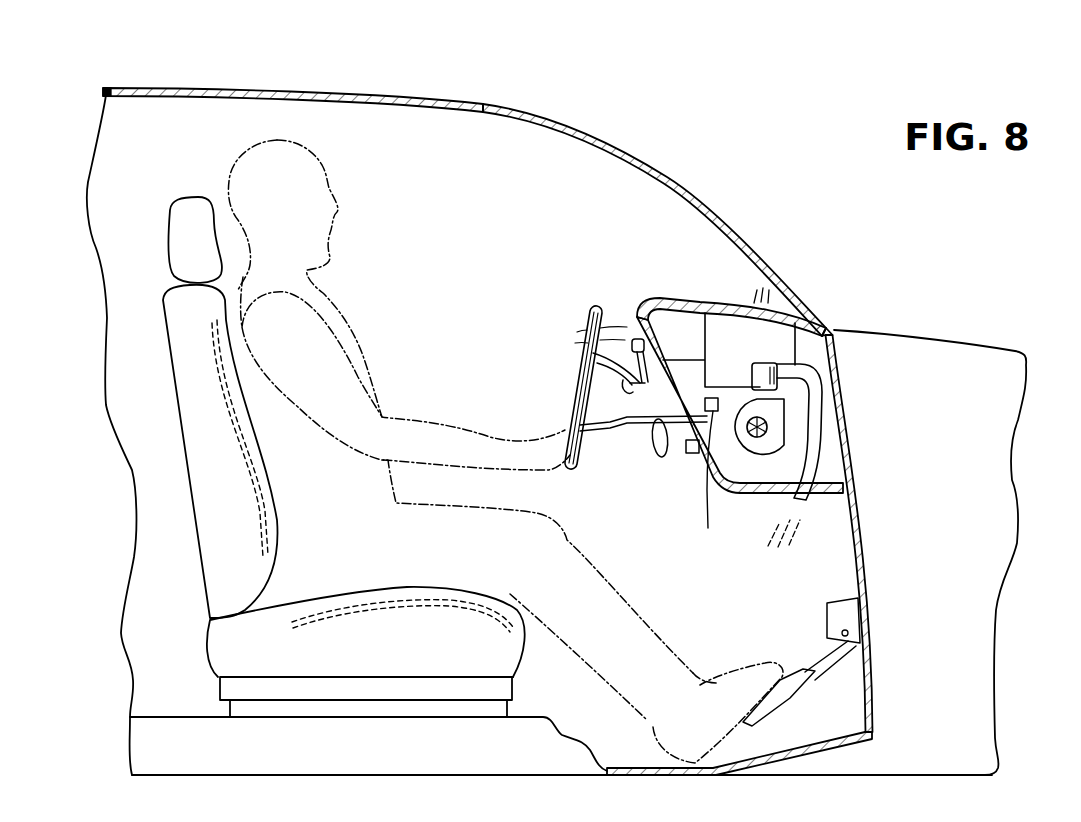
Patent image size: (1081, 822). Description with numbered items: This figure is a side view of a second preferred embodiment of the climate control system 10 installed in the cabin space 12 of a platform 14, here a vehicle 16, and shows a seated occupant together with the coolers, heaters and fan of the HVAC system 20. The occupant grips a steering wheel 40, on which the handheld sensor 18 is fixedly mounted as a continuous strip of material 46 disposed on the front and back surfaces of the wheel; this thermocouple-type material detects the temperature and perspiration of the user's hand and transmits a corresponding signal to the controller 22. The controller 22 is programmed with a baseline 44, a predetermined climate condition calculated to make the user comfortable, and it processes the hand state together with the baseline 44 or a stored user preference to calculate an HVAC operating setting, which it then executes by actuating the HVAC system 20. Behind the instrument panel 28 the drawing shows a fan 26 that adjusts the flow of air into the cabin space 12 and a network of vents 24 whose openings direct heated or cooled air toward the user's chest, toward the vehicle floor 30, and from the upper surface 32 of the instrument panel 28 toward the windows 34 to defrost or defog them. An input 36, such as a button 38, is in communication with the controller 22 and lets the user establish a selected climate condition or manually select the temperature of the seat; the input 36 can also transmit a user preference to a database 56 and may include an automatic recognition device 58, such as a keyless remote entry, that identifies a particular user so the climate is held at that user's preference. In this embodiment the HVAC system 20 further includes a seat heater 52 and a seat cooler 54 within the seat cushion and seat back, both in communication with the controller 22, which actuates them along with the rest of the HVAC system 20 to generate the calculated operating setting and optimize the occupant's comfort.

The system 10 is at (666, 100).
The cabin space 12 is at (469, 294).
The platform 14 is at (293, 61).
The vehicle 16 is at (271, 43).
The handheld sensor 18 is at (615, 354).
The HVAC system 20 is at (833, 308).
The controller 22 is at (705, 474).
The vents 24 is at (823, 407).
The fan 26 is at (757, 445).
The instrument panel 28 is at (738, 390).
The vehicle floor 30 is at (667, 770).
The upper surface 32 is at (733, 298).
The windows 34 is at (663, 177).
The input 36 is at (642, 480).
The button 38 is at (698, 456).
The steering wheel 40 is at (610, 305).
The baseline 44 is at (705, 474).
The continuous strip of material 46 is at (615, 354).
The seat heater 52 is at (410, 613).
The seat cooler 54 is at (263, 520).
The database 56 is at (705, 474).
The automatic recognition device 58 is at (657, 447).